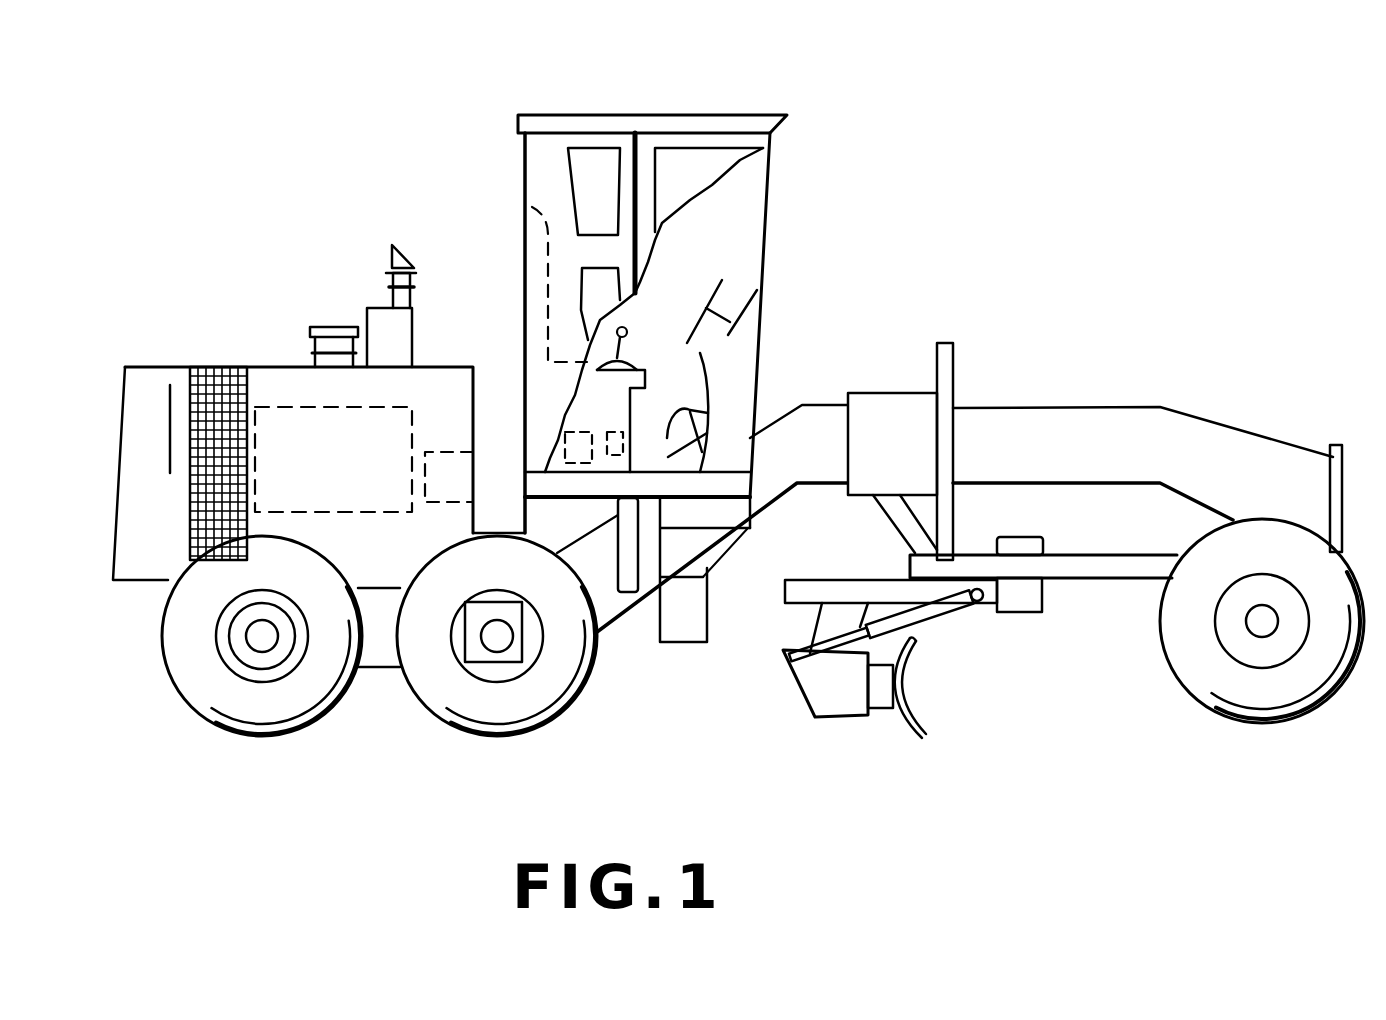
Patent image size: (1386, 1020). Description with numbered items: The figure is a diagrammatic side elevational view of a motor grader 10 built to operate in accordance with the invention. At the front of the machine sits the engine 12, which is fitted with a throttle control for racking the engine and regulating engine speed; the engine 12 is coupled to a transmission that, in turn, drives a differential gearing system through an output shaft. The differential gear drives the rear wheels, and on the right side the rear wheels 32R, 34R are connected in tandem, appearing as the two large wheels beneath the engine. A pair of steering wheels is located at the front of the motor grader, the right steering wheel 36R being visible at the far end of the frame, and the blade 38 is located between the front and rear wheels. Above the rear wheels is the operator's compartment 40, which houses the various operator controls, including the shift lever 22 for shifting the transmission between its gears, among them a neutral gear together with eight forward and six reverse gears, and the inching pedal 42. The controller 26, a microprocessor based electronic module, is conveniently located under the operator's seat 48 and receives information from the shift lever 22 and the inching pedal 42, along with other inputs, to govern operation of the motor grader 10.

The motor grader 10 is at (1138, 187).
The engine 12 is at (320, 430).
The shift lever 22 is at (627, 338).
The controller 26 is at (560, 425).
The right rear wheel 32R is at (545, 728).
The right rear wheel 34R is at (288, 740).
The right steering wheel 36R is at (1262, 725).
The blade 38 is at (903, 693).
The operator's compartment 40 is at (638, 115).
The inching pedal 42 is at (690, 425).
The operator's seat 48 is at (537, 258).